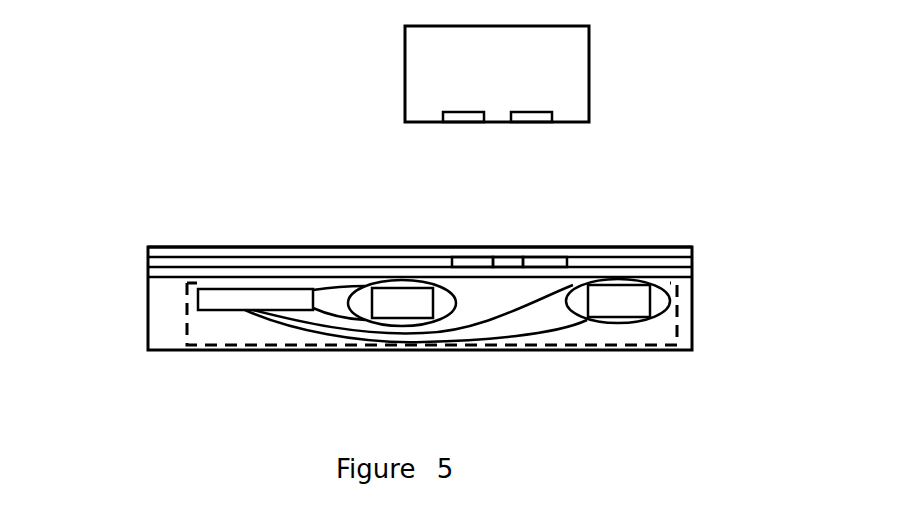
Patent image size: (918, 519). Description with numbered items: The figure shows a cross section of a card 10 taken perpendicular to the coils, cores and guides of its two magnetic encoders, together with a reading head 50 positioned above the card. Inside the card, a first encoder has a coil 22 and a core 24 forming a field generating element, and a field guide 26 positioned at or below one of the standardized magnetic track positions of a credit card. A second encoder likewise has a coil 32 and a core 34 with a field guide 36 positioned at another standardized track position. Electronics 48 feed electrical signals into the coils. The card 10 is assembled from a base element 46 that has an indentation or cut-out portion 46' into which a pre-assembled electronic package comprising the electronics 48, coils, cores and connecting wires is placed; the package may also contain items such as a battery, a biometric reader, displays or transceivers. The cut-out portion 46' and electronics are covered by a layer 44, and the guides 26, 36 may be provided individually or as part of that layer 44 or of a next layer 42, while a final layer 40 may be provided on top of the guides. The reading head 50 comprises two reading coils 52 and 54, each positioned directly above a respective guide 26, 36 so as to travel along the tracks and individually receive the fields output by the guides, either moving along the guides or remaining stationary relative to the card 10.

The card 10 is at (170, 332).
The coil 22 is at (360, 321).
The core 24 is at (402, 305).
The field guide 26 is at (470, 256).
The coil 32 is at (602, 327).
The core 34 is at (628, 305).
The field guide 36 is at (542, 256).
The final layer 40 is at (695, 247).
The next layer 42 is at (695, 258).
The layer 44 is at (695, 269).
The base element 46 is at (467, 317).
The cut-out portion 46' is at (401, 357).
The electronics 48 is at (242, 312).
The reading head 50 is at (497, 74).
The reading coil 52 is at (478, 110).
The reading coil 54 is at (552, 110).